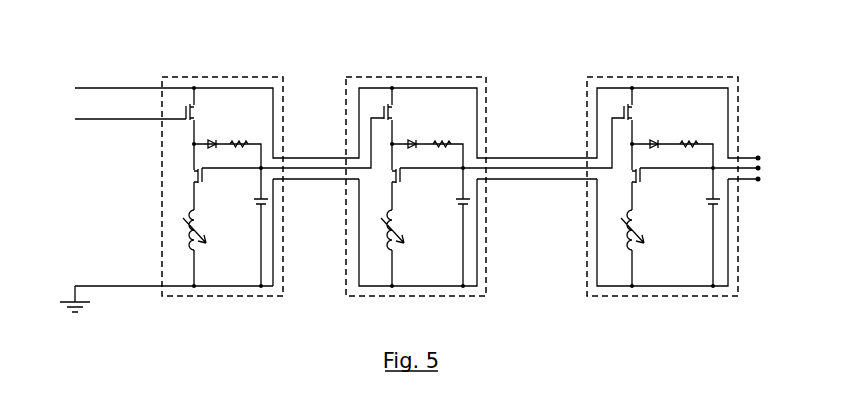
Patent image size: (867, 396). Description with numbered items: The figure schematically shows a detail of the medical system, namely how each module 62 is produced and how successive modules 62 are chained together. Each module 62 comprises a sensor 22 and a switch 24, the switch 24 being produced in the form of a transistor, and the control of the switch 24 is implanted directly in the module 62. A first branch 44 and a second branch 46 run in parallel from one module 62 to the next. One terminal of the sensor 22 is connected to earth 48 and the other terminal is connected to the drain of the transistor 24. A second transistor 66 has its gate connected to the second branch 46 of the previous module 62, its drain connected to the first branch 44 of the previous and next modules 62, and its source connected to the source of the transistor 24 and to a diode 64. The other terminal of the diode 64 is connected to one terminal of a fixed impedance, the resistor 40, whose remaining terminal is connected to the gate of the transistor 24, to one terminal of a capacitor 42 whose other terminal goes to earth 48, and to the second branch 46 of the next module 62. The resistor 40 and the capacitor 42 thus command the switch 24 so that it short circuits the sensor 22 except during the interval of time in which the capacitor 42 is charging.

The sensor 22 is at (384, 237).
The switch 24 is at (402, 176).
The resistor 40 is at (440, 140).
The capacitor 42 is at (461, 205).
The first branch 44 is at (119, 86).
The second branch 46 is at (133, 122).
The earth 48 is at (63, 300).
The module 62 is at (230, 71).
The diode 64 is at (412, 140).
The second transistor 66 is at (383, 107).